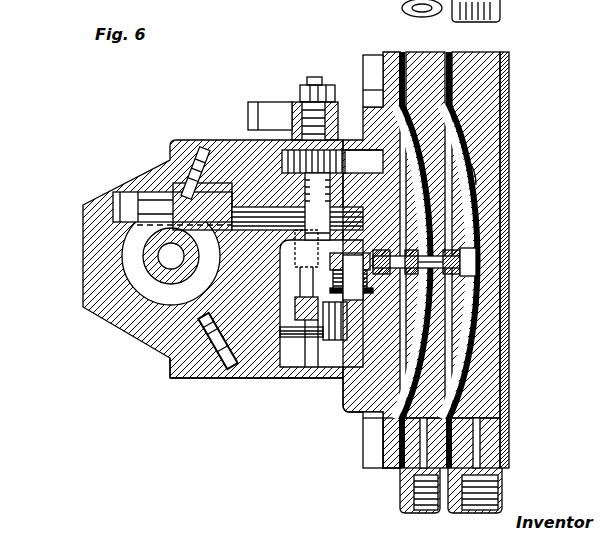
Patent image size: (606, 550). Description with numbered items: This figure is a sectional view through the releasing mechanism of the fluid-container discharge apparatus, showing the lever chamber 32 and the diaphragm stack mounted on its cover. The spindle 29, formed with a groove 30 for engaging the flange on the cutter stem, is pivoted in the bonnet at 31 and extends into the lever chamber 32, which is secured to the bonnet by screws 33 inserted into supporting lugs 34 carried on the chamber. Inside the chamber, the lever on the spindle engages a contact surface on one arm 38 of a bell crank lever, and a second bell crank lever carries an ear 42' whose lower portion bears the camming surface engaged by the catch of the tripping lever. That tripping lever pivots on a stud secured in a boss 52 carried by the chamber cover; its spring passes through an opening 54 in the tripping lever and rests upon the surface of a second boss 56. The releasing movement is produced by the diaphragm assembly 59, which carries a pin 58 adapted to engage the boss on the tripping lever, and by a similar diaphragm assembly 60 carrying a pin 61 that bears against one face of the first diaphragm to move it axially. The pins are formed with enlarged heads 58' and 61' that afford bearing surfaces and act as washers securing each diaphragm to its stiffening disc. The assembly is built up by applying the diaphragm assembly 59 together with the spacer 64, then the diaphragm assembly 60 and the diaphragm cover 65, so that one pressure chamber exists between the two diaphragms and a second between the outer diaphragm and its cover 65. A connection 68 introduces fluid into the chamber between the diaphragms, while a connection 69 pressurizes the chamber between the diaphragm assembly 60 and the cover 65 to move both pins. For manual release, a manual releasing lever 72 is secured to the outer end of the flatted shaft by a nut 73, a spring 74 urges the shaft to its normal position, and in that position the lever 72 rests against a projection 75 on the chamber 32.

The spindle 29 is at (185, 197).
The groove 30 is at (87, 240).
The spindle pivot 31 is at (127, 196).
The lever chamber 32 is at (300, 378).
The screws 33 is at (217, 157).
The supporting lugs 34 is at (173, 374).
The bell crank lever arm 38 is at (343, 380).
The ear 42' is at (309, 327).
The boss 52 is at (372, 216).
The opening in tripping lever 54 is at (362, 270).
The second boss 56 is at (420, 168).
The pin 58 is at (474, 260).
The enlarged head of pin 58' is at (500, 260).
The diaphragm assembly 59 is at (406, 54).
The diaphragm assembly 60 is at (482, 52).
The pin 61 is at (464, 264).
The enlarged head of pin 61' is at (486, 284).
The spacer 64 is at (425, 55).
The diaphragm cover 65 is at (507, 85).
The connection 68 is at (400, 508).
The connection 69 is at (500, 487).
The manual releasing lever 72 is at (260, 102).
The nut 73 is at (298, 96).
The spring 74 is at (357, 108).
The projection 75 is at (366, 152).